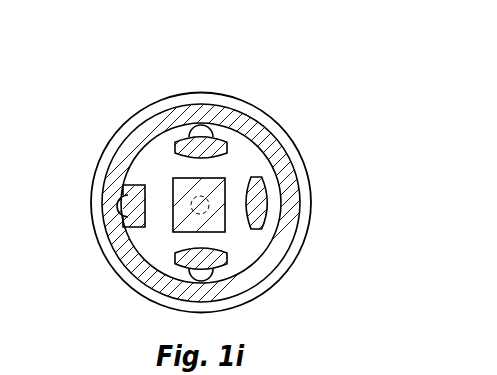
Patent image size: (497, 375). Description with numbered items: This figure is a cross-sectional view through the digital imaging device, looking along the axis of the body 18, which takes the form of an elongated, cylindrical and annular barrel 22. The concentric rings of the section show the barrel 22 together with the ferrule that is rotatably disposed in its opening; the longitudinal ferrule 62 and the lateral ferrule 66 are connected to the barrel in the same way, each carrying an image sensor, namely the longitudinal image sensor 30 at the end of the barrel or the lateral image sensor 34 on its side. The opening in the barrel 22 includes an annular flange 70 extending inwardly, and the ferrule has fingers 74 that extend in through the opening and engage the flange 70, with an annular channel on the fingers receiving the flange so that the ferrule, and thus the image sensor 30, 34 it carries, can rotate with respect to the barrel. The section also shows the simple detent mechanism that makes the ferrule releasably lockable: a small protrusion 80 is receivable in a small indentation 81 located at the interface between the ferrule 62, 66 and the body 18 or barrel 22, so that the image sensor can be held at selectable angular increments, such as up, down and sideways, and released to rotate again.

The body 18 is at (297, 168).
The barrel 22 is at (268, 125).
The longitudinal image sensor 30 is at (271, 247).
The lateral image sensor 34 is at (225, 232).
The longitudinal ferrule 62 is at (216, 205).
The lateral ferrule 66 is at (121, 270).
The annular flange 70 is at (152, 148).
The fingers 74 is at (220, 150).
The protrusion 80 is at (120, 212).
The indentation 81 is at (125, 193).